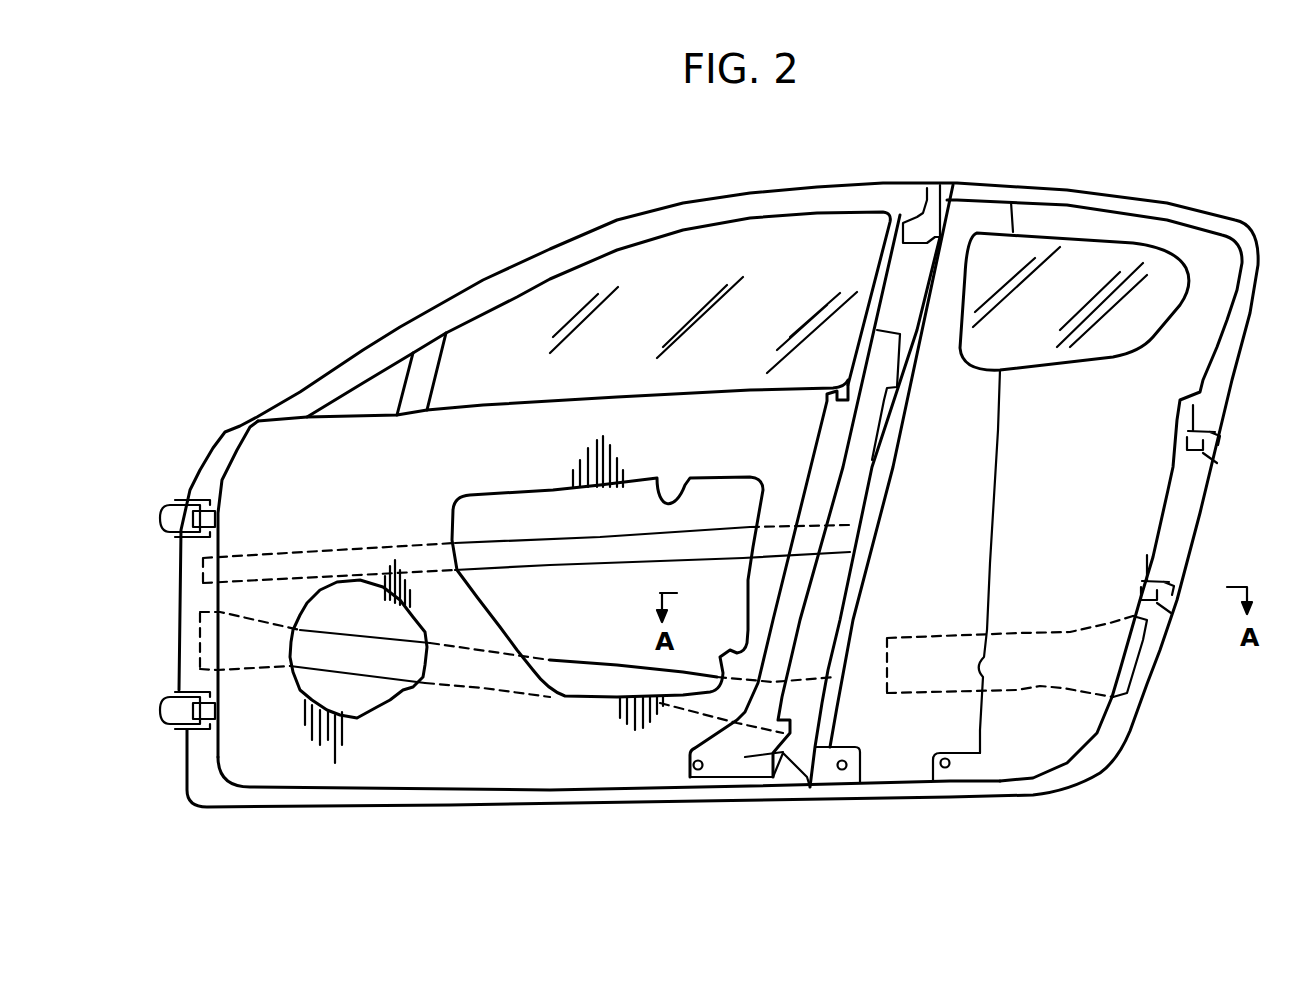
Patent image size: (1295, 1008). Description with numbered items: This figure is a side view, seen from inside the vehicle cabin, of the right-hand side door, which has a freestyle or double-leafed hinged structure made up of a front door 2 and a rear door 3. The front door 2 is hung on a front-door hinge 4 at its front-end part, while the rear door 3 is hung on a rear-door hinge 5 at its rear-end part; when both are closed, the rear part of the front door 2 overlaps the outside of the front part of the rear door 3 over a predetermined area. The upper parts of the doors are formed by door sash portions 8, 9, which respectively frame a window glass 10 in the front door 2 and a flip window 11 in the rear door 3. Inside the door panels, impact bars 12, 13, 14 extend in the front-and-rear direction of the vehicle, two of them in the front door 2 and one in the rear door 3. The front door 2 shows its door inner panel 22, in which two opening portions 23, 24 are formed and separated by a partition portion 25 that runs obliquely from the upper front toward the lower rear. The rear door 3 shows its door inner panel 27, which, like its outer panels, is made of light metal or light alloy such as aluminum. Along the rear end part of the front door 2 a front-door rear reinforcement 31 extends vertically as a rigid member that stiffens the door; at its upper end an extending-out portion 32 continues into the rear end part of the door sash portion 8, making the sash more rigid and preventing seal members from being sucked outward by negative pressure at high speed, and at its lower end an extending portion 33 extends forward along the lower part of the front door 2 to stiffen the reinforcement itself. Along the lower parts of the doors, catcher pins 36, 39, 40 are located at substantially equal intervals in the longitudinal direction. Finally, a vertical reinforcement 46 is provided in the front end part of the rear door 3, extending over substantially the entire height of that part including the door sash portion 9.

The front door 2 is at (452, 812).
The rear door 3 is at (990, 797).
The front-door hinge 4 is at (178, 507).
The rear-door hinge 5 is at (1222, 428).
The door sash portion 8 is at (576, 247).
The door sash portion 9 is at (1037, 218).
The window glass 10 is at (612, 364).
The flip window 11 is at (1085, 302).
The impact bar 12 is at (517, 541).
The impact bar 13 is at (560, 657).
The impact bar 14 is at (1020, 632).
The door inner panel 22 is at (390, 490).
The opening portion 23 is at (689, 477).
The opening portion 24 is at (401, 689).
The partition portion 25 is at (463, 610).
The door inner panel 27 is at (1048, 517).
The front-door rear reinforcement 31 is at (820, 410).
The extending-out portion 32 is at (900, 358).
The extending portion 33 is at (727, 777).
The catcher pin 36 is at (690, 777).
The catcher pin 39 is at (841, 771).
The catcher pin 40 is at (945, 769).
The vertical reinforcement 46 is at (1000, 467).